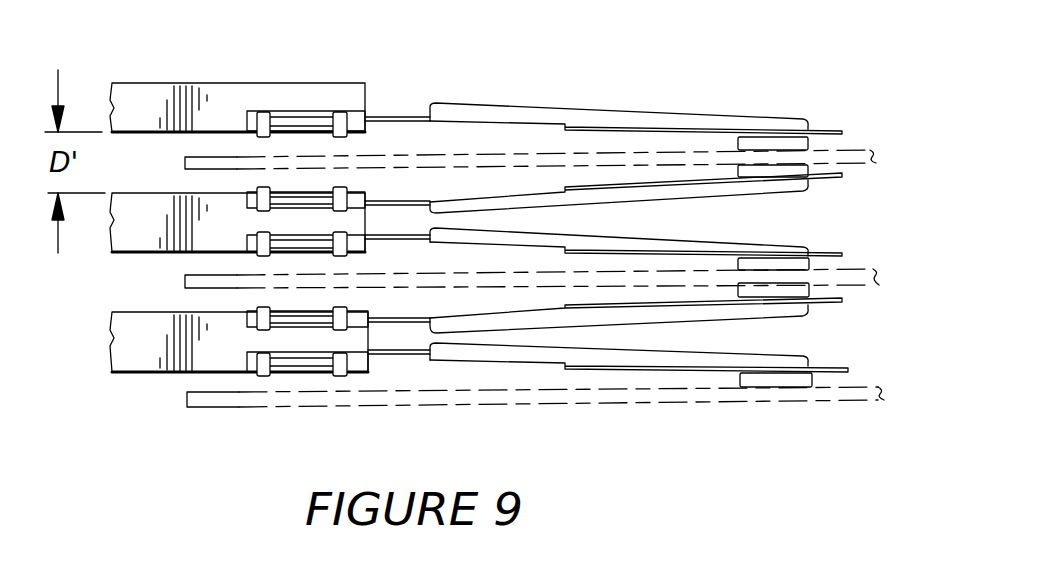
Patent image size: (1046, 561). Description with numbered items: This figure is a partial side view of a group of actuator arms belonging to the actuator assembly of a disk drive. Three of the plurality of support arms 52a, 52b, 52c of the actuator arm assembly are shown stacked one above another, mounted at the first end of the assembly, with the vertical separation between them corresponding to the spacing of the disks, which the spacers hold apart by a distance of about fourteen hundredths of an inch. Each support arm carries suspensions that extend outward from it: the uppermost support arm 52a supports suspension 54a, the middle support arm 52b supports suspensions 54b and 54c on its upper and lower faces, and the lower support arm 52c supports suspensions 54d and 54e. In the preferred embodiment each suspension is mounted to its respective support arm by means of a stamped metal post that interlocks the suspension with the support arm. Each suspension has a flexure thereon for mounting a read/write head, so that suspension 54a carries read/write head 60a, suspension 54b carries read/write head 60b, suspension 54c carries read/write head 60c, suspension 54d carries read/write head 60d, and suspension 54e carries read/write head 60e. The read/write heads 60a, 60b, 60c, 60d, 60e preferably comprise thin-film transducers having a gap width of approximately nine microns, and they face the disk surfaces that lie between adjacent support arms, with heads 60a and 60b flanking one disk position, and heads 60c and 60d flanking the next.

The support arm 52a is at (272, 96).
The support arm 52b is at (148, 208).
The support arm 52c is at (137, 323).
The suspension 54a is at (532, 115).
The suspension 54b is at (737, 190).
The suspension 54c is at (722, 243).
The suspension 54d is at (768, 310).
The suspension 54e is at (742, 361).
The read/write head 60a is at (783, 142).
The read/write head 60b is at (787, 176).
The read/write head 60c is at (792, 262).
The read/write head 60d is at (787, 288).
The read/write head 60e is at (785, 380).